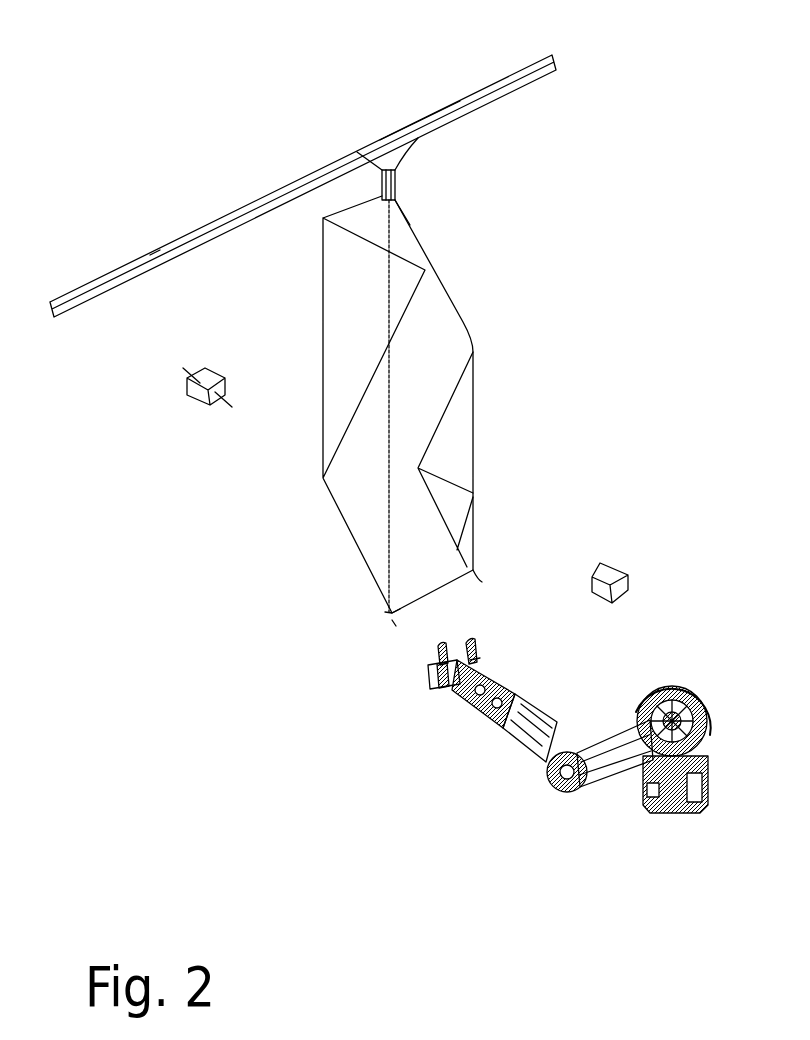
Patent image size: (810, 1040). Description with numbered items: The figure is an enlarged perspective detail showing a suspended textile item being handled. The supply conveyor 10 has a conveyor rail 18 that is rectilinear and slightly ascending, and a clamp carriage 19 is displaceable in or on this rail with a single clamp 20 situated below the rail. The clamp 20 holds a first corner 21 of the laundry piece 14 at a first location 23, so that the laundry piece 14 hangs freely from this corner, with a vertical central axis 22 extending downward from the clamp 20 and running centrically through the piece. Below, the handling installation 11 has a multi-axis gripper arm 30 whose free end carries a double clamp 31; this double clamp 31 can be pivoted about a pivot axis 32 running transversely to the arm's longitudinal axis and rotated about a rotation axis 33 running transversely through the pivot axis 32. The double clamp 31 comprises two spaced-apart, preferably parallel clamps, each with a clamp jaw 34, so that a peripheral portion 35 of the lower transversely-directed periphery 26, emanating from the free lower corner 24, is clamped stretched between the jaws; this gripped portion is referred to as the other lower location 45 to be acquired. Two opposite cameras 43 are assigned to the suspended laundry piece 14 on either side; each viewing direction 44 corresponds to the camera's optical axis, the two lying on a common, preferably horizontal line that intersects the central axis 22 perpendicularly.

The supply conveyor 10 is at (245, 137).
The handling installation 11 is at (547, 772).
The laundry piece 14 is at (434, 408).
The conveyor rail 18 is at (483, 92).
The clamp carriage 19 is at (423, 118).
The clamp 20 is at (398, 185).
The first corner 21 is at (410, 205).
The vertical central axis 22 is at (392, 367).
The first location 23 is at (453, 169).
The free lower corner 24 is at (388, 617).
The lower transversely-directed periphery 26 is at (400, 620).
The gripper arm 30 is at (524, 747).
The double clamp 31 is at (437, 693).
The pivot axis 32 is at (462, 704).
The rotation axis 33 is at (423, 649).
The clamp jaw 34 is at (450, 653).
The peripheral portion 35 is at (443, 588).
The camera 43 is at (612, 582).
The viewing direction 44 is at (588, 562).
The other lower location 45 is at (400, 628).